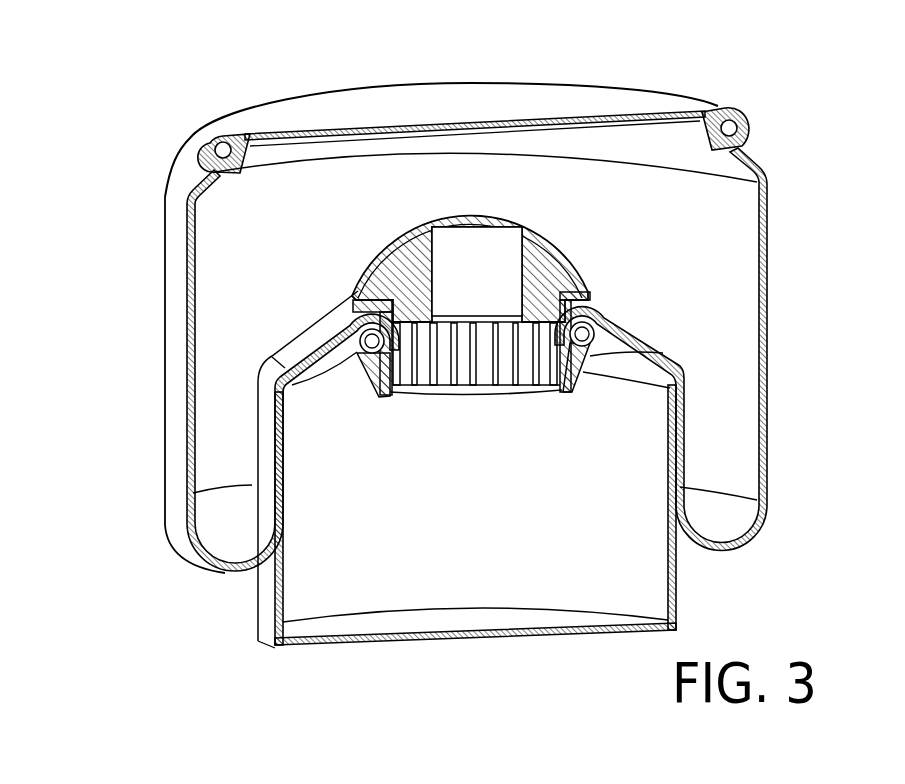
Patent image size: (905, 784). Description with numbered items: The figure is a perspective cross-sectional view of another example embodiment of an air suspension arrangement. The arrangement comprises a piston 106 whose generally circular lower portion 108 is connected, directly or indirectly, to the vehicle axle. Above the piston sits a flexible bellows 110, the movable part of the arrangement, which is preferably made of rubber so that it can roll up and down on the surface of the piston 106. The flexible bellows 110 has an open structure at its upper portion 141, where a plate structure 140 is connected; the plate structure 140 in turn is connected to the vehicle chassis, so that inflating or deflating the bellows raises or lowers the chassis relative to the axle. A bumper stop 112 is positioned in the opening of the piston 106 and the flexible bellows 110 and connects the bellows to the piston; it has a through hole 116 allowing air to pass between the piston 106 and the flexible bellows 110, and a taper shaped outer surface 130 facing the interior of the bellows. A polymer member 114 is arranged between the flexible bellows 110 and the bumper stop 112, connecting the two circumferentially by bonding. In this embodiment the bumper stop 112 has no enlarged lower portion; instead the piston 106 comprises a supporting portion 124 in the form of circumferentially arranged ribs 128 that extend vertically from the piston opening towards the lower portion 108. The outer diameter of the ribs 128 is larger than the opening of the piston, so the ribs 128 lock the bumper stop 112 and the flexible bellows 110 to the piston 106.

The piston 106 is at (677, 610).
The lower portion 108 is at (393, 647).
The flexible bellows 110 is at (770, 195).
The bumper stop 112 is at (547, 262).
The polymer member 114 is at (597, 293).
The through hole 116 is at (480, 270).
The supporting portion 124 is at (628, 352).
The ribs 128 is at (522, 393).
The taper shaped outer surface 130 is at (376, 272).
The plate structure 140 is at (248, 117).
The upper portion 141 is at (207, 140).